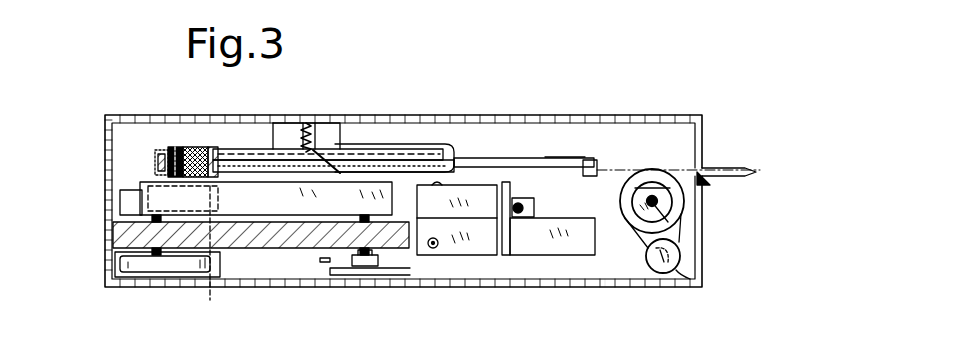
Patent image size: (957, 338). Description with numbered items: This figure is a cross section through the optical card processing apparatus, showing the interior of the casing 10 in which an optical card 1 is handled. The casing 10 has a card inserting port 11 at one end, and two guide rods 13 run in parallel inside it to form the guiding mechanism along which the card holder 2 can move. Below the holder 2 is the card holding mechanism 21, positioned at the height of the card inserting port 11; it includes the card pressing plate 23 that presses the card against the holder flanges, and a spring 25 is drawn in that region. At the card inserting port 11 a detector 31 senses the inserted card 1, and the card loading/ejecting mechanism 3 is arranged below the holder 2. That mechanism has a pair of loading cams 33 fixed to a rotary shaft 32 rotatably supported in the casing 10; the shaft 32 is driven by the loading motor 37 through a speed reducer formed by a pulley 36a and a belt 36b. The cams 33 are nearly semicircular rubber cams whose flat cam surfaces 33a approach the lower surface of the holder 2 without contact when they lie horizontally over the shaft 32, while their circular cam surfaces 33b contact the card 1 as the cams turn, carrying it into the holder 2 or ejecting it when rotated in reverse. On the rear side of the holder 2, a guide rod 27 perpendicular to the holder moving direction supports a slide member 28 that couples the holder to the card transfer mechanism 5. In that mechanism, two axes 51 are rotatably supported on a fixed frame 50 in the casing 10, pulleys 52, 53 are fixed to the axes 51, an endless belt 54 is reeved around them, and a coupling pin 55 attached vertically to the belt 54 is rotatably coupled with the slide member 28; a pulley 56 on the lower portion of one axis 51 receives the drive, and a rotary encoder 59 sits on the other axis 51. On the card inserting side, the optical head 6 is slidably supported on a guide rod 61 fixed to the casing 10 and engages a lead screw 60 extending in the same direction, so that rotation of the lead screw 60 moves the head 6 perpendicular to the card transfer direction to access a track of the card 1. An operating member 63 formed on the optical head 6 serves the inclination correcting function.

The optical card 1 is at (616, 165).
The card holder 2 is at (222, 148).
The card loading/ejecting mechanism 3 is at (637, 268).
The card transfer mechanism 5 is at (128, 152).
The optical head 6 is at (463, 205).
The casing 10 is at (700, 135).
The card inserting port 11 is at (748, 174).
The guide rods 13 is at (517, 158).
The card holding mechanism 21 is at (256, 196).
The card pressing plate 23 is at (400, 160).
The spring 25 is at (352, 152).
The guide rod 27 is at (196, 148).
The slide member 28 is at (160, 152).
The detector 31 is at (594, 160).
The rotary shaft 32 is at (690, 215).
The loading cams 33 is at (638, 226).
The flat cam surfaces 33a is at (672, 165).
The circular cam surfaces 33b is at (680, 202).
The pulley 36a is at (650, 168).
The belt 36b is at (682, 254).
The loading motor 37 is at (678, 270).
The fixed frame 50 is at (118, 232).
The axes 51 is at (157, 256).
The pulley 52 is at (207, 262).
The pulley 53 is at (345, 188).
The endless belt 54 is at (258, 205).
The coupling pin 55 is at (176, 150).
The pulley 56 is at (150, 270).
The rotary encoder 59 is at (380, 268).
The lead screw 60 is at (534, 206).
The guide rod 61 is at (436, 250).
The operating member 63 is at (514, 250).